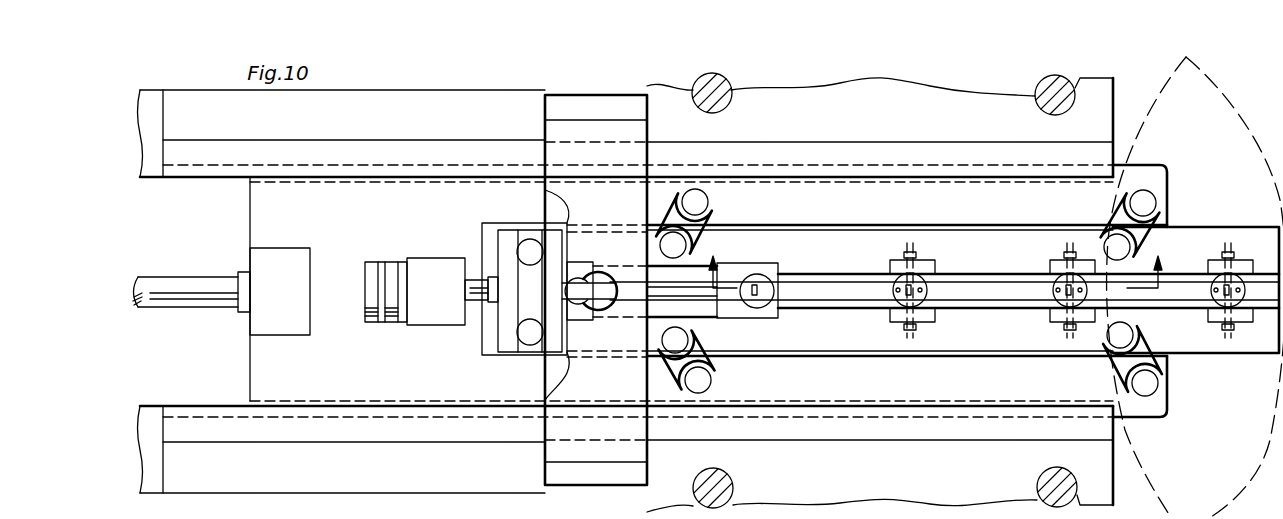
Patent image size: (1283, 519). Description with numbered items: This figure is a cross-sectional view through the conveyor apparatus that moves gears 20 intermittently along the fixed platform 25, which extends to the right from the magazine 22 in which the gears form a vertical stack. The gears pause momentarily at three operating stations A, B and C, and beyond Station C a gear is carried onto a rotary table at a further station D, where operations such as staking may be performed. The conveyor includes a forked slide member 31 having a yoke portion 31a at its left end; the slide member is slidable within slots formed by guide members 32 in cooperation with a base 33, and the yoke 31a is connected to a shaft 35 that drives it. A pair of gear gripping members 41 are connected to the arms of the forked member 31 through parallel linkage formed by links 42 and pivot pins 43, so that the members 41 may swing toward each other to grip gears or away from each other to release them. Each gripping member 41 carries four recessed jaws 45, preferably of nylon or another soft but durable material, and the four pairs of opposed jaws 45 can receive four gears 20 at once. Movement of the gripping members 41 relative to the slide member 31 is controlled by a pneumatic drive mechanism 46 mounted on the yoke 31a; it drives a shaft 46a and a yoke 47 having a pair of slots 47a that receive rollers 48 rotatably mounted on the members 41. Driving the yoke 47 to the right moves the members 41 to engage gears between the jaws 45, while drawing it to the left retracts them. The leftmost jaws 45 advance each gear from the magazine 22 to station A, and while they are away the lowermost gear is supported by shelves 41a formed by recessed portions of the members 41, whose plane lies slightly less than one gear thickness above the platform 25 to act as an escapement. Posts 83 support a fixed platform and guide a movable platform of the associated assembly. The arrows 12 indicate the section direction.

The direction arrow 12 is at (937, 261).
The gear 20 is at (772, 298).
The magazine 22 is at (612, 282).
The platform 25 is at (688, 292).
The forked slide member 31 is at (962, 190).
The yoke portion 31a is at (292, 358).
The guide member 32 is at (875, 158).
The base 33 is at (890, 103).
The shaft 35 is at (190, 288).
The gear gripping member 41 is at (855, 250).
The shelf 41a is at (742, 270).
The link 42 is at (707, 212).
The pivot pin 43 is at (695, 190).
The recessed jaw 45 is at (1060, 272).
The pneumatic drive mechanism 46 is at (424, 252).
The shaft 46a is at (468, 328).
The yoke 47 is at (510, 343).
The slot 47a is at (527, 240).
The roller 48 is at (530, 345).
The post 83 is at (733, 93).
The operating station A is at (776, 265).
The operating station B is at (931, 270).
The operating station C is at (1046, 270).
The station D is at (1240, 262).